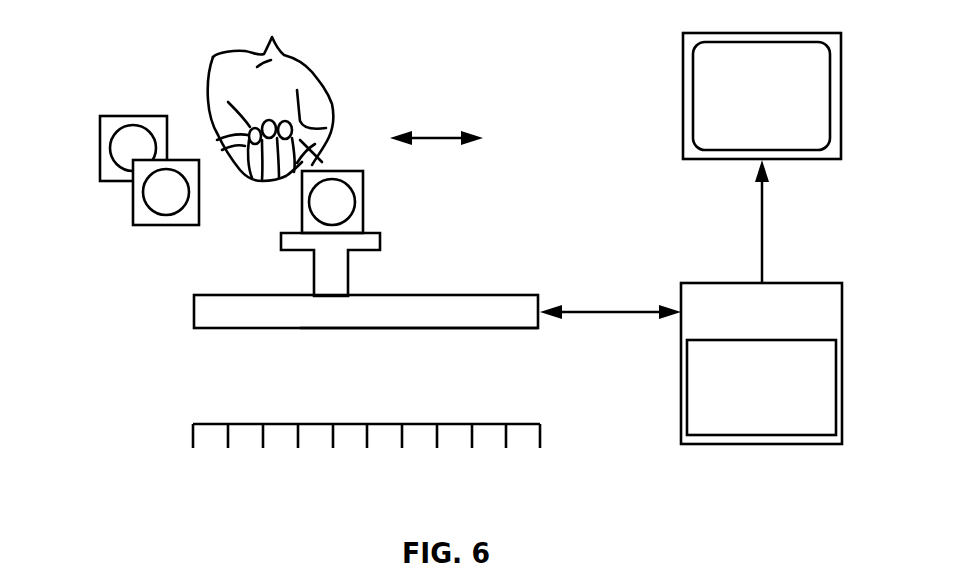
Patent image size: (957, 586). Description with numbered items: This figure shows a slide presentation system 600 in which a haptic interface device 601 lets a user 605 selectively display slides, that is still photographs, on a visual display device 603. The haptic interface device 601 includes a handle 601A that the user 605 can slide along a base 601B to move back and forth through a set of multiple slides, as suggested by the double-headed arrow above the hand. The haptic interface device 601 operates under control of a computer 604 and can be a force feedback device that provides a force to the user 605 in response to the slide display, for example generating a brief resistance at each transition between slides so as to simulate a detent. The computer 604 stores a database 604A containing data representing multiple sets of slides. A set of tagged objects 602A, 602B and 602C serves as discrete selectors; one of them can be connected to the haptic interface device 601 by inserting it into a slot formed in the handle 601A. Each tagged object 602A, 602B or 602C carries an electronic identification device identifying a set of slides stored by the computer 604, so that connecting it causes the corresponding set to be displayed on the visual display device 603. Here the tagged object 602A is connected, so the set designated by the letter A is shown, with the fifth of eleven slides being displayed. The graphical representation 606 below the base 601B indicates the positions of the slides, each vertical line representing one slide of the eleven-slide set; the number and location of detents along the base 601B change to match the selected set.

The slide presentation system 600 is at (158, 44).
The haptic interface device 601 is at (224, 336).
The handle 601A is at (381, 242).
The base 601B is at (415, 329).
The tagged object 602A is at (302, 201).
The tagged object 602B is at (134, 216).
The tagged object 602C is at (100, 141).
The visual display device 603 is at (683, 98).
The computer 604 is at (681, 402).
The database 604A is at (761, 387).
The user 605 is at (328, 92).
The graphical representation of the position of the slides 606 is at (192, 427).